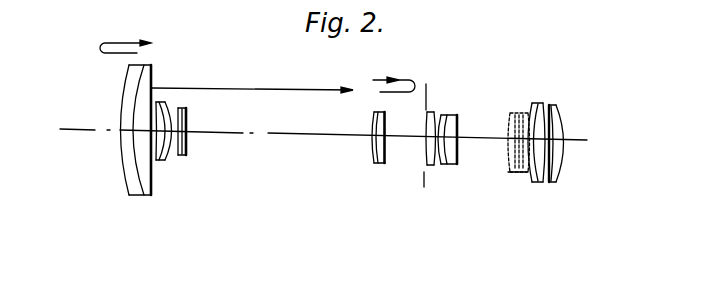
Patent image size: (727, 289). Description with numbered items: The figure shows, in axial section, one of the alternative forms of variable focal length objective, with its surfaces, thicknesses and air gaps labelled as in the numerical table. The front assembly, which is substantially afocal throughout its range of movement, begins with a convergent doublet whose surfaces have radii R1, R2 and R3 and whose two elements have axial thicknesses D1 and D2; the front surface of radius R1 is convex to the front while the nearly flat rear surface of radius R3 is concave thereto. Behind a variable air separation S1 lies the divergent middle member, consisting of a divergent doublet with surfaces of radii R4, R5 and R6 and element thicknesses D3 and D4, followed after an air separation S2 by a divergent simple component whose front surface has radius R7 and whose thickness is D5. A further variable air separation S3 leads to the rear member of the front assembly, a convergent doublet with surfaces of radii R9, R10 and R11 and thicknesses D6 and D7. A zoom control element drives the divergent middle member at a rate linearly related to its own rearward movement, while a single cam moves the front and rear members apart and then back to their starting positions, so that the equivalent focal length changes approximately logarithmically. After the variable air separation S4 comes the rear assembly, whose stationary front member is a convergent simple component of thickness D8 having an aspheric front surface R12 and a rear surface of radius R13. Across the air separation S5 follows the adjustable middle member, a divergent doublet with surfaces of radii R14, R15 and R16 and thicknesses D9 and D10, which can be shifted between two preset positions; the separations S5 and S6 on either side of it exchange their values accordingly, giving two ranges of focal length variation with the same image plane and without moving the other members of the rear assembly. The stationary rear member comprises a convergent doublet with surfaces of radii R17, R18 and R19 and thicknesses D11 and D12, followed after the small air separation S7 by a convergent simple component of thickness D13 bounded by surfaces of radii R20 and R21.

The radius of curvature R1 is at (122, 108).
The radius of curvature R2 is at (133, 80).
The radius of curvature R3 is at (152, 90).
The radius of curvature R4 is at (158, 105).
The radius of curvature R5 is at (179, 108).
The radius of curvature R6 is at (186, 123).
The radius of curvature R7 is at (184, 133).
The radius of curvature R9 is at (372, 128).
The radius of curvature R10 is at (375, 113).
The radius of curvature R11 is at (384, 112).
The radius of curvature R12 is at (432, 112).
The radius of curvature R13 is at (440, 111).
The radius of curvature R14 is at (447, 117).
The radius of curvature R15 is at (452, 127).
The radius of curvature R16 is at (455, 155).
The radius of curvature R17 is at (532, 107).
The radius of curvature R18 is at (551, 105).
The radius of curvature R19 is at (557, 107).
The radius of curvature R20 is at (558, 117).
The radius of curvature R21 is at (562, 137).
The axial thickness D1 is at (132, 138).
The axial thickness D2 is at (150, 134).
The axial thickness D3 is at (168, 137).
The axial thickness D4 is at (181, 140).
The axial thickness D5 is at (185, 132).
The axial thickness D6 is at (374, 136).
The axial thickness D7 is at (377, 164).
The axial thickness D8 is at (429, 157).
The axial thickness D9 is at (443, 166).
The axial thickness D10 is at (450, 164).
The axial thickness D11 is at (540, 150).
The axial thickness D12 is at (552, 147).
The axial thickness D13 is at (562, 142).
The axial air separation S1 is at (155, 162).
The axial air separation S2 is at (188, 138).
The axial air separation S3 is at (290, 136).
The axial air separation S4 is at (402, 141).
The axial air separation S5 is at (436, 166).
The axial air separation S6 is at (509, 172).
The axial air separation S7 is at (562, 143).